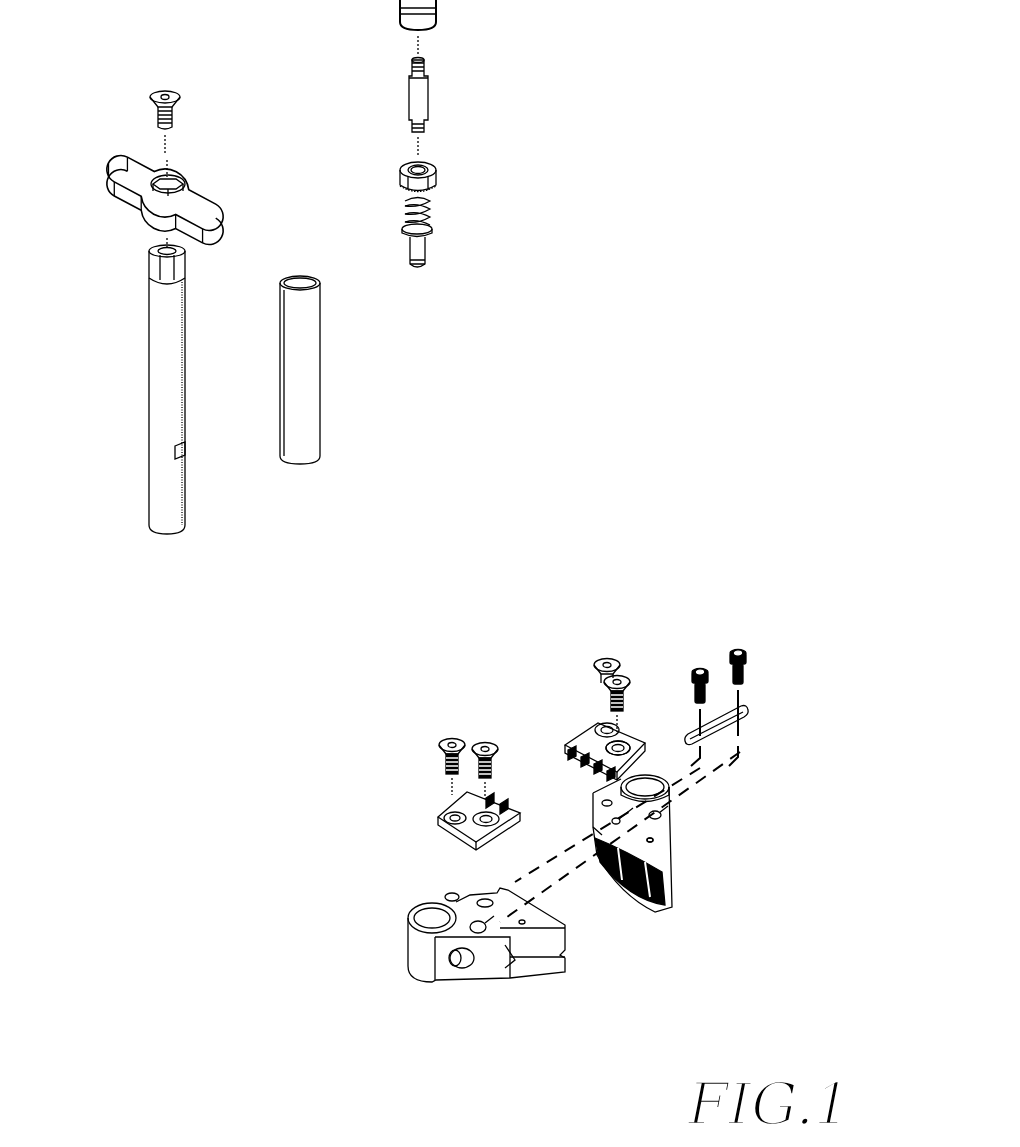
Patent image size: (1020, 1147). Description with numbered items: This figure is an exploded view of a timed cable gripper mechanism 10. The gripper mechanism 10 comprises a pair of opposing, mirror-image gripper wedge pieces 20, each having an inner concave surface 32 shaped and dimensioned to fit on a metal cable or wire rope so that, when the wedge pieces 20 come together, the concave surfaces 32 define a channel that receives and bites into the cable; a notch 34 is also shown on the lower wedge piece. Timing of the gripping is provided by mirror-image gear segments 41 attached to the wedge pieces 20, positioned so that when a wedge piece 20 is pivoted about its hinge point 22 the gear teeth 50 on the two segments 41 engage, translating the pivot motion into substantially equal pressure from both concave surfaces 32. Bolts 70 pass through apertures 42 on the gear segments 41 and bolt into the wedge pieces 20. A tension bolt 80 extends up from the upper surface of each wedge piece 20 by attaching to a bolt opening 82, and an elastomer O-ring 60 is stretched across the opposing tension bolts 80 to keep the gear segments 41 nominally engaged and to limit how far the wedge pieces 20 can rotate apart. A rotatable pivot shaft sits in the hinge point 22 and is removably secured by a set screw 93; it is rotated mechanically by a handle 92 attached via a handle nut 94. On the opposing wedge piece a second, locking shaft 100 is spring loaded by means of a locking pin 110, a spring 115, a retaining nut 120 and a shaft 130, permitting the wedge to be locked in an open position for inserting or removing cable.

The gripper mechanism 10 is at (766, 578).
The gripper wedge piece 20 is at (625, 828).
The hinge point 22 is at (432, 916).
The concave surface 32 is at (640, 900).
The notch 34 is at (508, 972).
The gear segment 41 is at (470, 797).
The aperture 42 is at (625, 745).
The gear teeth 50 is at (575, 758).
The O-ring 60 is at (745, 718).
The bolt 70 is at (487, 743).
The tension bolt 80 is at (736, 651).
The bolt opening 82 is at (525, 923).
The handle 92 is at (210, 210).
The set screw 93 is at (457, 968).
The handle nut 94 is at (180, 95).
The locking shaft 100 is at (300, 392).
The locking pin 110 is at (425, 248).
The spring 115 is at (432, 208).
The retaining nut 120 is at (430, 168).
The shaft 130 is at (420, 108).